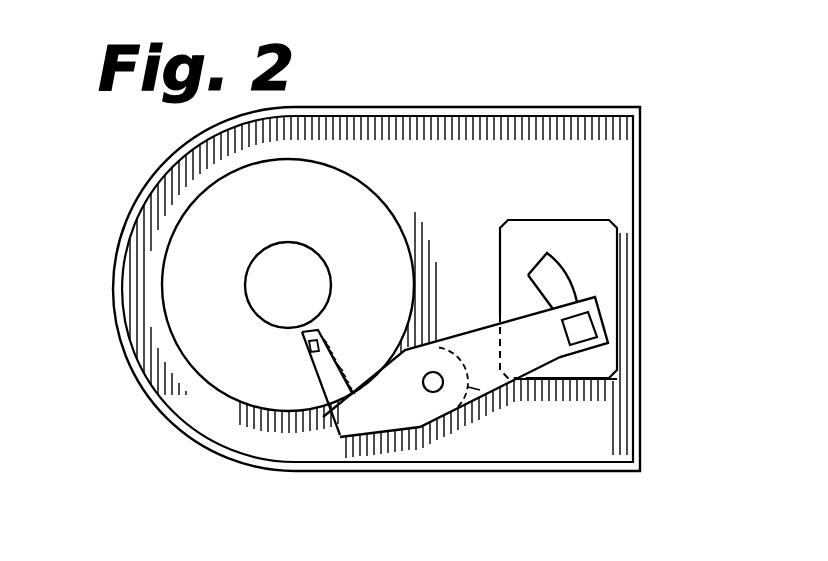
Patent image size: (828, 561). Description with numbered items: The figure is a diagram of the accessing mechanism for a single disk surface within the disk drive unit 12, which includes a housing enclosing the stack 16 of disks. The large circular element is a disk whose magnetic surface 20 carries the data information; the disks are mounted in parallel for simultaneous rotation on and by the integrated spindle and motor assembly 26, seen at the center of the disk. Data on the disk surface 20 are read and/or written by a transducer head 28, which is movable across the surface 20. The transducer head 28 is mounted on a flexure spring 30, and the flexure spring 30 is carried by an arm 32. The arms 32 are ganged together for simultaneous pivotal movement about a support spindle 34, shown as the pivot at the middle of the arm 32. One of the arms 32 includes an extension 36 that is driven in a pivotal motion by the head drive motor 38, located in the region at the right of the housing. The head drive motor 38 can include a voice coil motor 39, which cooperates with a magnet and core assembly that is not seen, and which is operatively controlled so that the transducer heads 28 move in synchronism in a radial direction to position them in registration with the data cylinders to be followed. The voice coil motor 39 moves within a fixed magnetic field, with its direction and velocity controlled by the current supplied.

The disk drive unit 12 is at (494, 95).
The stack of disks 16 is at (150, 281).
The magnetic surface 20 is at (226, 194).
The integrated spindle and motor assembly 26 is at (313, 257).
The transducer head 28 is at (307, 350).
The flexure spring 30 is at (316, 375).
The arm 32 is at (520, 410).
The support spindle 34 is at (434, 371).
The extension 36 is at (547, 361).
The head drive motor 38 is at (585, 223).
The voice coil motor 39 is at (580, 325).